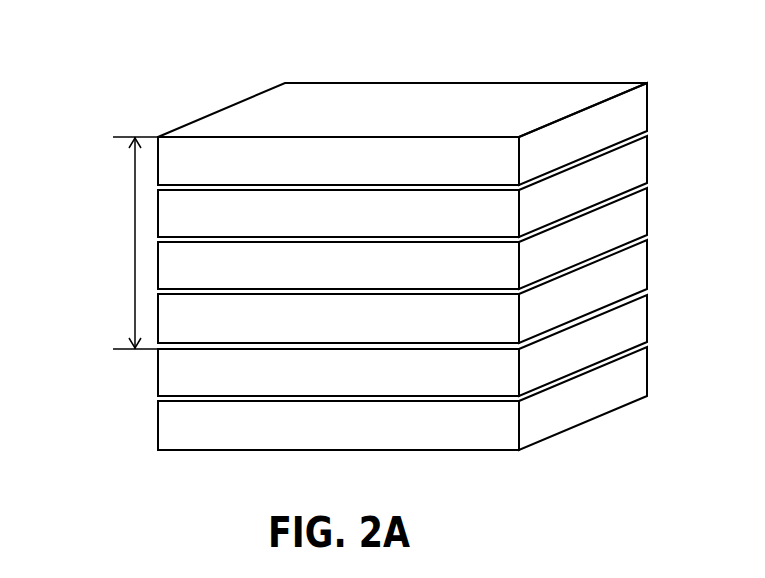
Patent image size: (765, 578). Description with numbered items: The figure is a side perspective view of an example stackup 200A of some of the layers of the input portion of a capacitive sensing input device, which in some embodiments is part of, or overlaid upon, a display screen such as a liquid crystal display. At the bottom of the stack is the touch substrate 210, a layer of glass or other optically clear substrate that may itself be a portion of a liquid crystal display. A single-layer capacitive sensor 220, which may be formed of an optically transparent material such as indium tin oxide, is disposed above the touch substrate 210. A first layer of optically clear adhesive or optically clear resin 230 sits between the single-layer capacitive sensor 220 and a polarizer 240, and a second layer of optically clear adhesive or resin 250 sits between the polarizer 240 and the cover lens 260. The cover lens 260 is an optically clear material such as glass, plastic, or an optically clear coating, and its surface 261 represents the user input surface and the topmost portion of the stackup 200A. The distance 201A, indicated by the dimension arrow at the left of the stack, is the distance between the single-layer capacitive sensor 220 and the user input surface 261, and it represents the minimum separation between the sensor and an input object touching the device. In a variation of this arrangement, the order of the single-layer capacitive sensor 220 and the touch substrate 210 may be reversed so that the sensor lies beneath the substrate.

The stackup 200A is at (55, 51).
The distance 201A is at (135, 182).
The surface 261 is at (486, 90).
The cover lens 260 is at (412, 171).
The second layer of OCA/OCR 250 is at (505, 224).
The polarizer 240 is at (400, 276).
The first layer of OCA/OCR 230 is at (505, 330).
The single-layer capacitive sensor 220 is at (506, 384).
The touch substrate 210 is at (436, 437).